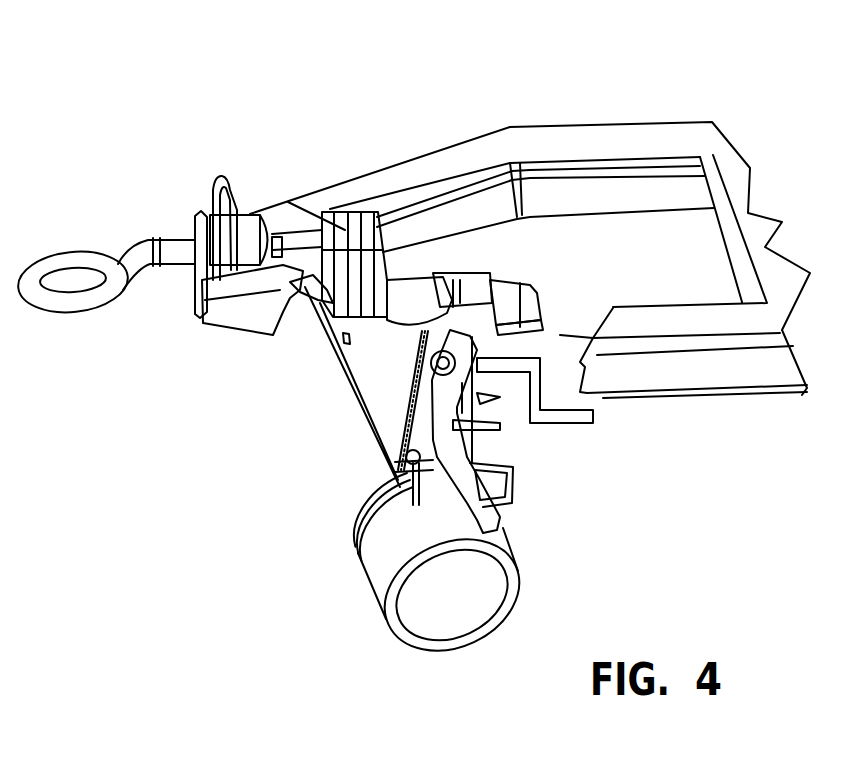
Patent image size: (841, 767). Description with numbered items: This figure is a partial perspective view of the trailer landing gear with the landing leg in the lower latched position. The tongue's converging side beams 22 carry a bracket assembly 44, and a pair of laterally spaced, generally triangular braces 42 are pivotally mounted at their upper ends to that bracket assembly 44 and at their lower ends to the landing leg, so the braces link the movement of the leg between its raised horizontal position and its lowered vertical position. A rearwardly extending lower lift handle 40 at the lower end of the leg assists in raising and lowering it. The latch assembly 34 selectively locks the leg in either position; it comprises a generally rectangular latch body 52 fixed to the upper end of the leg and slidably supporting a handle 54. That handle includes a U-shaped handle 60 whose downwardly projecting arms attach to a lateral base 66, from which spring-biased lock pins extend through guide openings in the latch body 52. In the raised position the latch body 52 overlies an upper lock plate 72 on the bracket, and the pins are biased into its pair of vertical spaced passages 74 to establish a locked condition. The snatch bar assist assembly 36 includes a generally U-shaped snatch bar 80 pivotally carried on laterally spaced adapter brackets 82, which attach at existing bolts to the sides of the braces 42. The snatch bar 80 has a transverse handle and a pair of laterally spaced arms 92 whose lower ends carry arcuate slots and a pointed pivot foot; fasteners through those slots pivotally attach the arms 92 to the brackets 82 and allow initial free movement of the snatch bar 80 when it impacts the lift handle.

The side beams 22 is at (455, 152).
The latch assembly 34 is at (478, 260).
The snatch bar assist assembly 36 is at (390, 429).
The lower lift handle 40 is at (513, 492).
The triangular braces 42 is at (367, 370).
The bracket assembly 44 is at (402, 258).
The latch body 52 is at (477, 292).
The handle 54 is at (540, 300).
The U-shaped handle 60 is at (510, 338).
The lateral base 66 is at (530, 332).
The upper lock plate 72 is at (300, 212).
The vertical spaced passages 74 is at (340, 207).
The snatch bar 80 is at (493, 523).
The adapter brackets 82 is at (400, 455).
The arms 92 is at (500, 430).